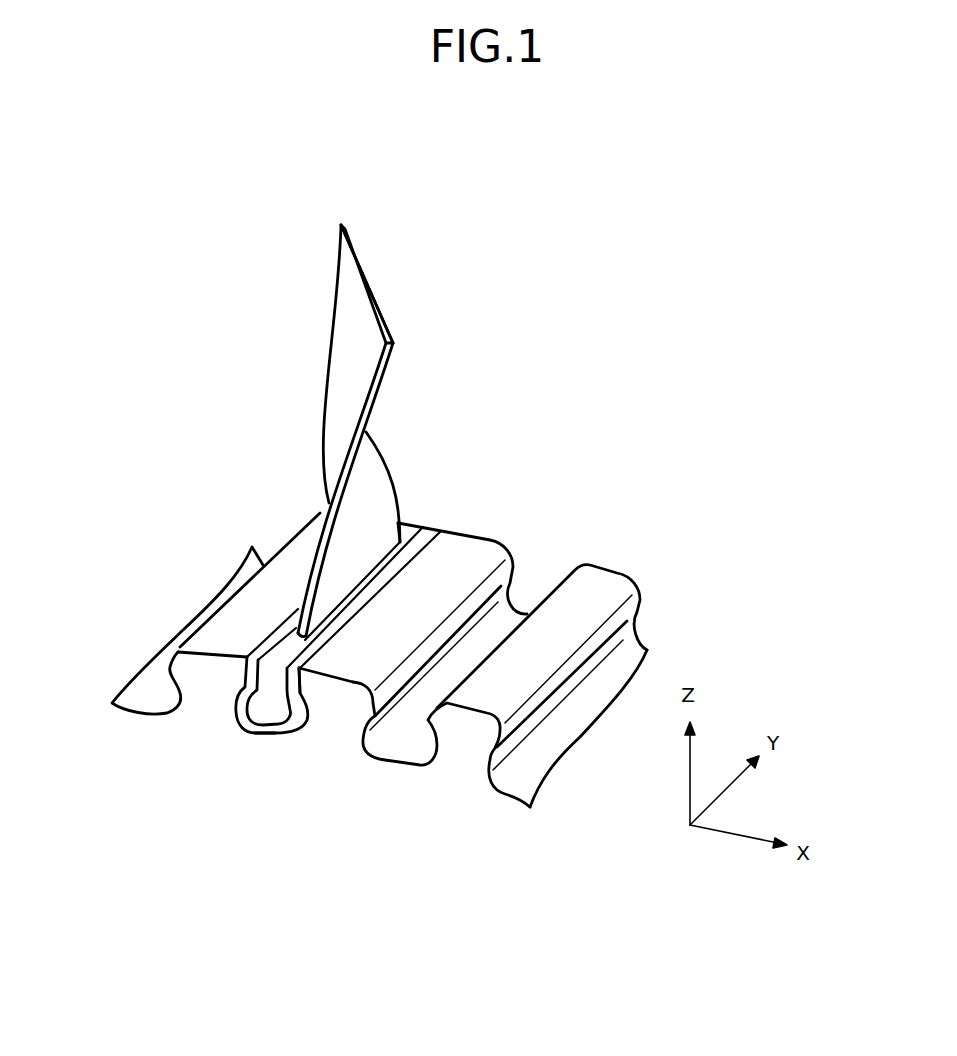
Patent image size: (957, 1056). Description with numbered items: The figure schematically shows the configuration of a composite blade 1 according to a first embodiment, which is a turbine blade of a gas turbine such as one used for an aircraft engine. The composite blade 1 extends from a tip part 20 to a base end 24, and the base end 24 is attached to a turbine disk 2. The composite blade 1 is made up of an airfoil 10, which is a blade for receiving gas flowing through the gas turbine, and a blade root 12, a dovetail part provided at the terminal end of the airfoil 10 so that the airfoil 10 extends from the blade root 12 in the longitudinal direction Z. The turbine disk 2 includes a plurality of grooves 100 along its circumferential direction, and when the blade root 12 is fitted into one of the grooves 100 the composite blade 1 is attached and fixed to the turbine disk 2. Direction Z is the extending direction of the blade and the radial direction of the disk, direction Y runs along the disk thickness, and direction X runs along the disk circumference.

The composite blade 1 is at (379, 516).
The turbine disk 2 is at (458, 795).
The airfoil 10 is at (390, 423).
The tip part 20 is at (362, 270).
The grooves 100 is at (259, 738).
The base end 24 is at (271, 740).
The blade root 12 is at (287, 727).